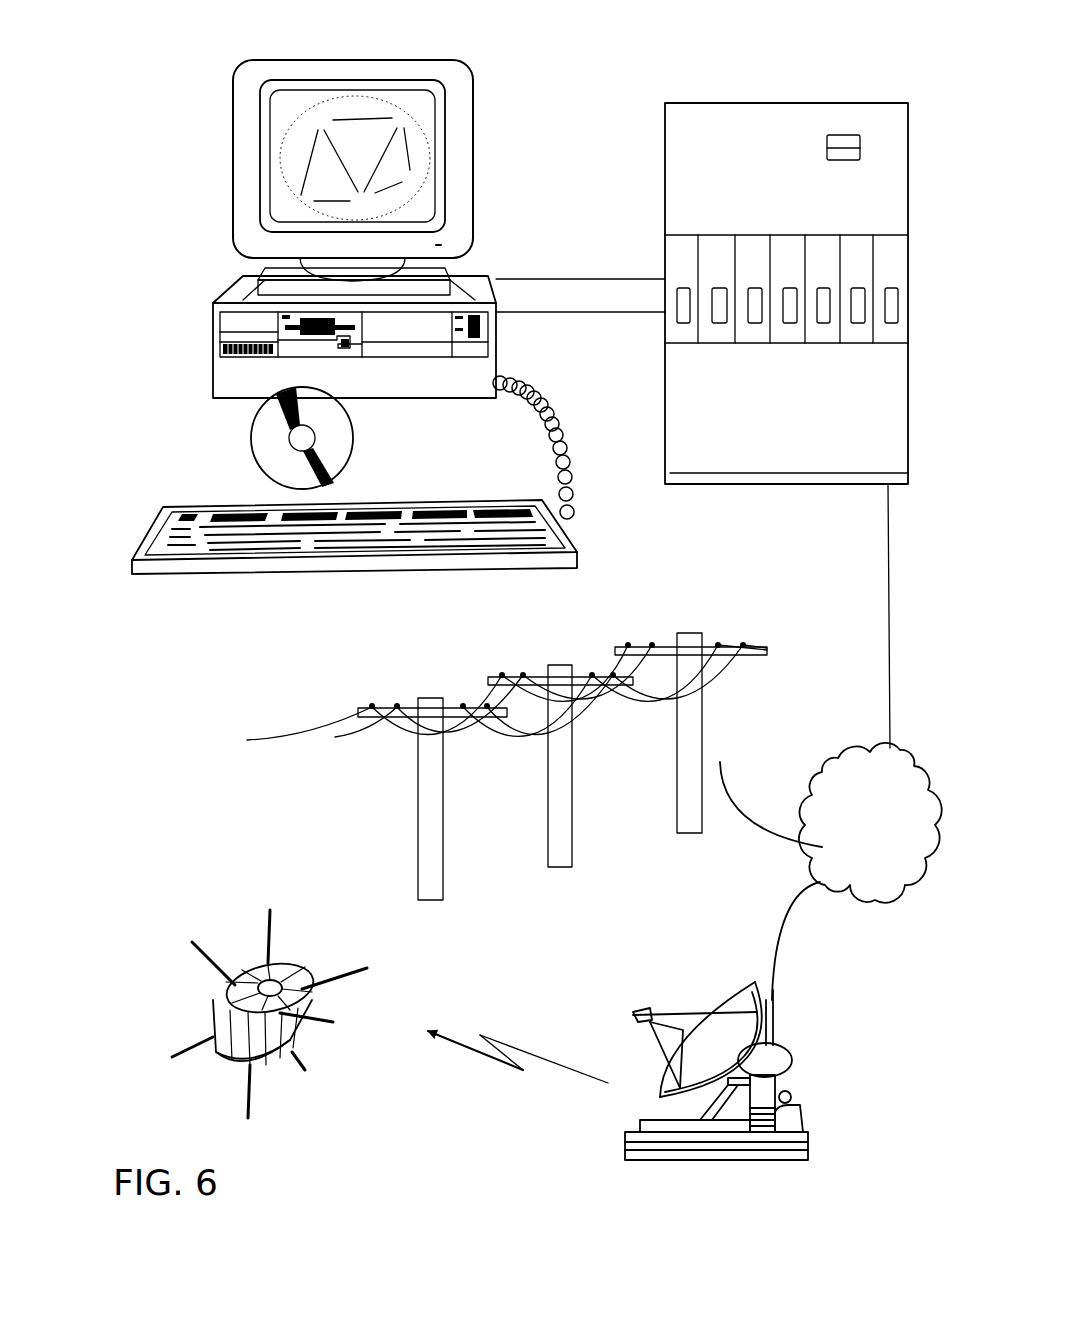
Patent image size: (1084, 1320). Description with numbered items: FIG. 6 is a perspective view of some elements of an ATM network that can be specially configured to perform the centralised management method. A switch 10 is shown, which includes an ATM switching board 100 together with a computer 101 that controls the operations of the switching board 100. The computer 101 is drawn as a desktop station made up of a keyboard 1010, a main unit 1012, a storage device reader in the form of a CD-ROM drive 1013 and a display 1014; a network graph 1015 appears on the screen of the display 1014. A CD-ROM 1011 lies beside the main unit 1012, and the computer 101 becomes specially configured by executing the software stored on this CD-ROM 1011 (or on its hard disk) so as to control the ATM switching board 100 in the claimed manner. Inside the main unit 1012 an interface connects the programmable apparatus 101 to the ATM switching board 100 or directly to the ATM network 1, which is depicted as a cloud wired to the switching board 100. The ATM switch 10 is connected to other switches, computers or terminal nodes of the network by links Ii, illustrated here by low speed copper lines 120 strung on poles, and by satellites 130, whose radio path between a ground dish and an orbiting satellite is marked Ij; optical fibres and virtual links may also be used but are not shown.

The switch 10 is at (484, 190).
The ATM switching board 100 is at (710, 115).
The computer 101 is at (210, 118).
The keyboard 1010 is at (200, 512).
The CD-ROM 1011 is at (262, 435).
The main unit 1012 is at (212, 383).
The CD-ROM drive 1013 is at (225, 330).
The display 1014 is at (235, 172).
The displayed network graph 1015 is at (314, 112).
The ATM network 1 is at (892, 884).
The low speed copper lines 120 is at (530, 715).
The satellites 130 is at (557, 1067).
The links Ii is at (507, 692).
The information flow on satellite link Ij is at (518, 1043).